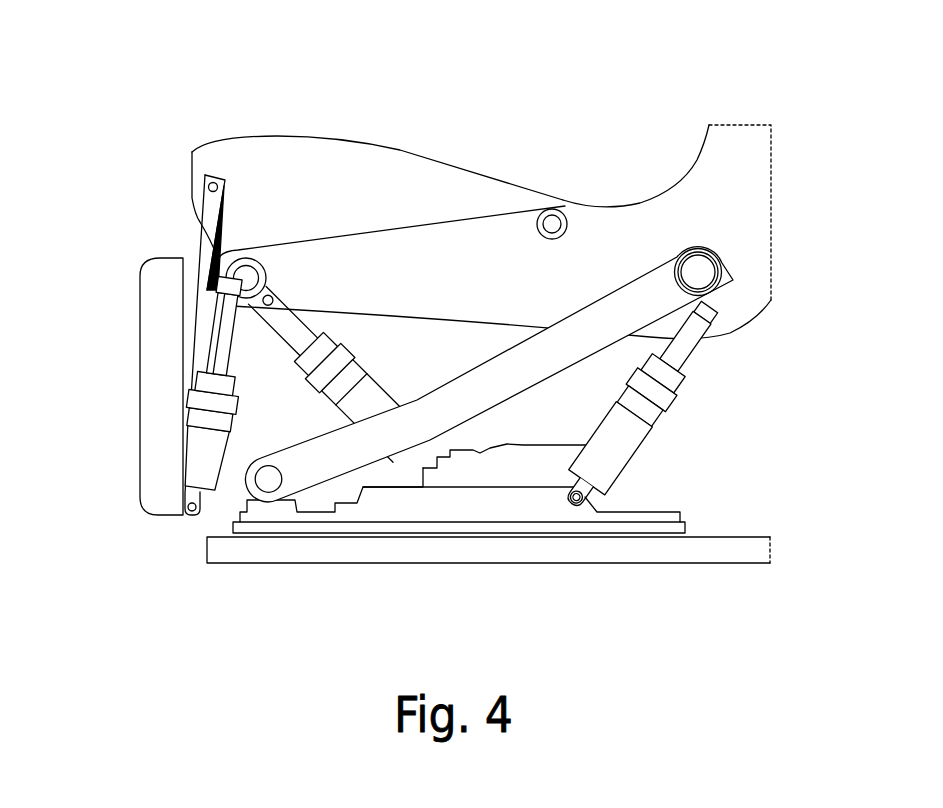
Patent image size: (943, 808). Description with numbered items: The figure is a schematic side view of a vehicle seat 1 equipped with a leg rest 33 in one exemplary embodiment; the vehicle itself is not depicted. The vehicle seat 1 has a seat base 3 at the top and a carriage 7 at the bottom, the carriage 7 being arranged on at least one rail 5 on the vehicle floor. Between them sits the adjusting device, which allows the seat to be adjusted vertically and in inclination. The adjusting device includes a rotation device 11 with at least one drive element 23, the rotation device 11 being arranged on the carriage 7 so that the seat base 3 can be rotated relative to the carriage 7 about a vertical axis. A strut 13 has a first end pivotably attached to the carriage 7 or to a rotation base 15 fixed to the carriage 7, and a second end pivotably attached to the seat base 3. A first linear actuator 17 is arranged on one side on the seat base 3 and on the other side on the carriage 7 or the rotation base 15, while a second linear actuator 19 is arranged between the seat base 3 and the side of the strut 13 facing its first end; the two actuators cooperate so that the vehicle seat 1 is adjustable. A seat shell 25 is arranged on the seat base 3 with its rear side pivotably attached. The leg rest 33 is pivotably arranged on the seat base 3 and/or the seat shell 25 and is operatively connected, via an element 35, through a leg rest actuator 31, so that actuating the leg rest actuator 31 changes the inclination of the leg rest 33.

The vehicle seat 1 is at (435, 319).
The seat base 3 is at (470, 243).
The rail 5 is at (250, 564).
The carriage 7 is at (441, 533).
The rotation device 11 is at (518, 493).
The strut 13 is at (405, 432).
The rotation base 15 is at (660, 512).
The first linear actuator 17 is at (677, 378).
The second linear actuator 19 is at (300, 361).
The drive element 23 is at (553, 446).
The seat shell 25 is at (338, 137).
The leg rest actuator 31 is at (221, 458).
The leg rest 33 is at (140, 343).
The element 35 is at (200, 236).